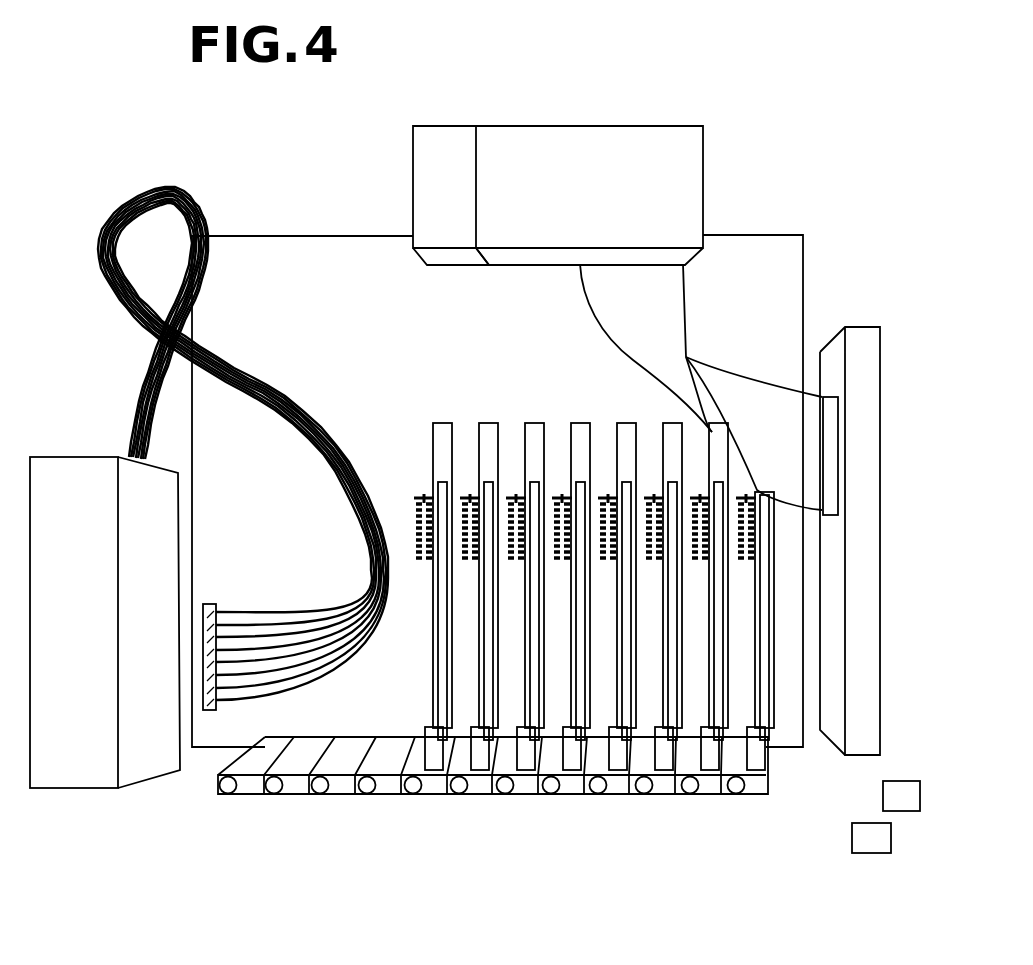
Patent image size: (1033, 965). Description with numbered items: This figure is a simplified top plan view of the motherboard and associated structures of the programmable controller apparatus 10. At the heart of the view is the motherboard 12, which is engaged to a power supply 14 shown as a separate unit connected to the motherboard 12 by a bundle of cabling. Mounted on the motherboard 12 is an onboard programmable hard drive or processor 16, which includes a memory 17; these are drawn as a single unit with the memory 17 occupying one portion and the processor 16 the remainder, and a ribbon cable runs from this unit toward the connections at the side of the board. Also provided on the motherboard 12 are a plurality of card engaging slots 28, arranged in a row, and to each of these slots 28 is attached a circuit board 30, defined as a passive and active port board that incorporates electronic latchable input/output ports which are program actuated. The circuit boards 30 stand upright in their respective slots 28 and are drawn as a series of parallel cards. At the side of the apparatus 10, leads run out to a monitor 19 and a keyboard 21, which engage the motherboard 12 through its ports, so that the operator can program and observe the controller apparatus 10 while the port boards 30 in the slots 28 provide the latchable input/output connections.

The controller apparatus 10 is at (814, 103).
The motherboard 12 is at (457, 347).
The power supply 14 is at (95, 635).
The processor 16 is at (604, 202).
The memory 17 is at (463, 197).
The monitor 19 is at (873, 755).
The keyboard 21 is at (862, 755).
The card engaging slots 28 is at (422, 496).
The circuit board 30 is at (446, 423).